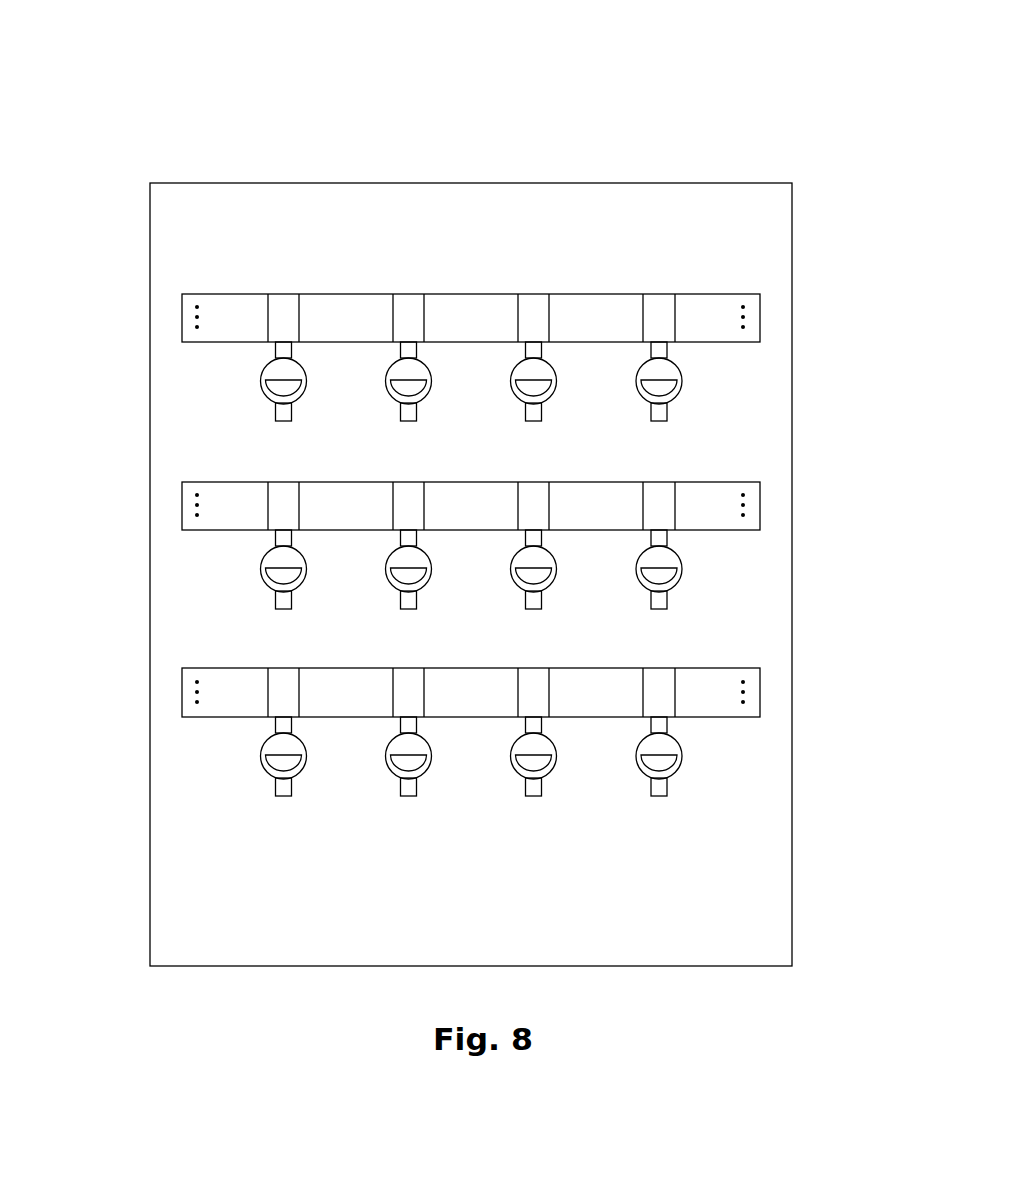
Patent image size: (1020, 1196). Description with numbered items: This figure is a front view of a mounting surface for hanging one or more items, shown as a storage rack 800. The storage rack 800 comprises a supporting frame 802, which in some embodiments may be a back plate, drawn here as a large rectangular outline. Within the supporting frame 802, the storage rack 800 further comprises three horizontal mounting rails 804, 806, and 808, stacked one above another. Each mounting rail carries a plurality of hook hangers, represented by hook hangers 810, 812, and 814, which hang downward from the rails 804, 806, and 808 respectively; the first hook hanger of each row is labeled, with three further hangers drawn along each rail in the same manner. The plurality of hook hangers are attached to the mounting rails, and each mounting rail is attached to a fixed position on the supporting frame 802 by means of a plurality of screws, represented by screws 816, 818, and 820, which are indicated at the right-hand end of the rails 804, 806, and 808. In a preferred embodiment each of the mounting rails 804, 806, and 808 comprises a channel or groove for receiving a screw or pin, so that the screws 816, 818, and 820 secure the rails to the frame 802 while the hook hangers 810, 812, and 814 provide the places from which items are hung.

The storage rack 800 is at (842, 37).
The supporting frame 802 is at (792, 213).
The mounting rail 804 is at (470, 293).
The mounting rail 806 is at (475, 481).
The mounting rail 808 is at (475, 668).
The hook hanger 810 is at (260, 387).
The hook hanger 812 is at (260, 568).
The hook hanger 814 is at (260, 755).
The screw 816 is at (750, 327).
The screw 818 is at (750, 513).
The screw 820 is at (750, 702).